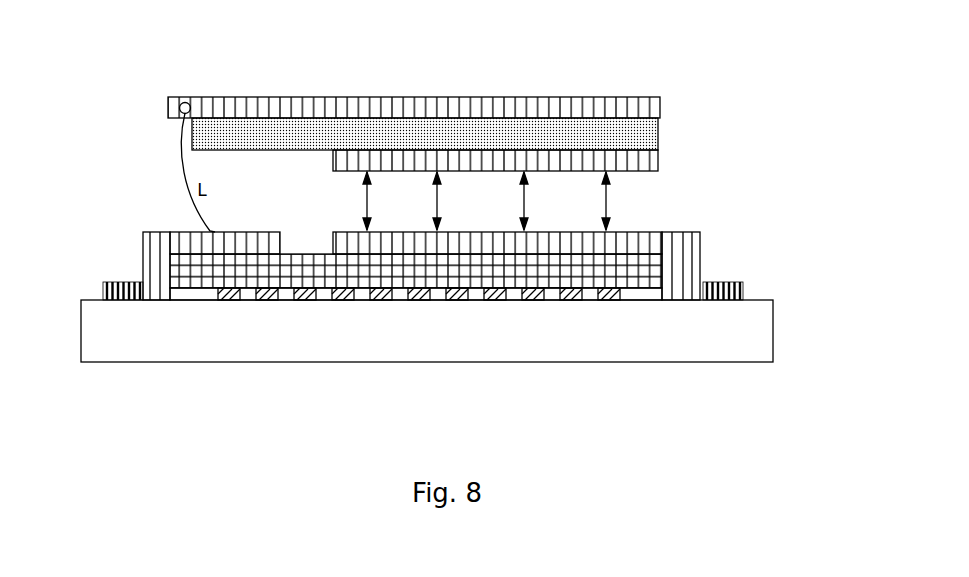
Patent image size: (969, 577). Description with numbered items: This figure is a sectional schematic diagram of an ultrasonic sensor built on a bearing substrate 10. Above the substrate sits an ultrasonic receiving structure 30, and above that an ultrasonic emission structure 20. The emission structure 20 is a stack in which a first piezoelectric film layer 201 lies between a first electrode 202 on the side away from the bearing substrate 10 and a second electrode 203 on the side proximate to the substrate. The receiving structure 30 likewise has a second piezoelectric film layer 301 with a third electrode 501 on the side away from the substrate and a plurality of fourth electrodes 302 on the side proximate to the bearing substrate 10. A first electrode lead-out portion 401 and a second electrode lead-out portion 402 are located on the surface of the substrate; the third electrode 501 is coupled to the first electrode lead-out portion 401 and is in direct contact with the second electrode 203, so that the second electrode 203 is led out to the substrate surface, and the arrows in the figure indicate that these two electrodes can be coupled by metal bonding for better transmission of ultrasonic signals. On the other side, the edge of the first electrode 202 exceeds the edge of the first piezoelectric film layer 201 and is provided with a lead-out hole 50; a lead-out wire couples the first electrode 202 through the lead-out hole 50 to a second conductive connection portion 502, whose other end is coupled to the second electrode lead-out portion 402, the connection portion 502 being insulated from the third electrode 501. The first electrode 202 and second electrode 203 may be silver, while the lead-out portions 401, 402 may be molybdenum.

The bearing substrate 10 is at (355, 337).
The ultrasonic emission structure 20 is at (456, 93).
The first piezoelectric film layer 201 is at (546, 130).
The first electrode 202 is at (612, 106).
The second electrode 203 is at (652, 162).
The ultrasonic receiving structure 30 is at (479, 309).
The second piezoelectric film layer 301 is at (637, 283).
The fourth electrodes 302 is at (608, 292).
The first electrode lead-out portion 401 is at (722, 302).
The second electrode lead-out portion 402 is at (122, 281).
The lead-out hole 50 is at (185, 103).
The third electrode 501 is at (640, 233).
The second conductive connection portion 502 is at (173, 238).